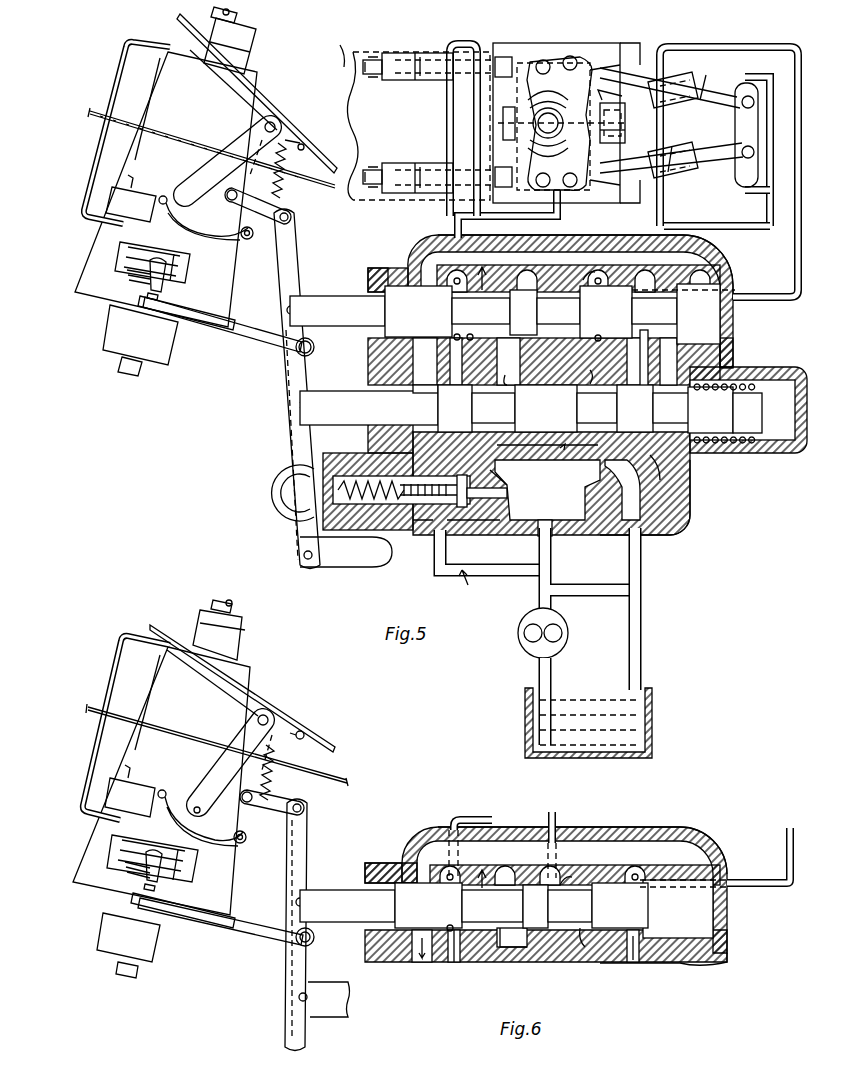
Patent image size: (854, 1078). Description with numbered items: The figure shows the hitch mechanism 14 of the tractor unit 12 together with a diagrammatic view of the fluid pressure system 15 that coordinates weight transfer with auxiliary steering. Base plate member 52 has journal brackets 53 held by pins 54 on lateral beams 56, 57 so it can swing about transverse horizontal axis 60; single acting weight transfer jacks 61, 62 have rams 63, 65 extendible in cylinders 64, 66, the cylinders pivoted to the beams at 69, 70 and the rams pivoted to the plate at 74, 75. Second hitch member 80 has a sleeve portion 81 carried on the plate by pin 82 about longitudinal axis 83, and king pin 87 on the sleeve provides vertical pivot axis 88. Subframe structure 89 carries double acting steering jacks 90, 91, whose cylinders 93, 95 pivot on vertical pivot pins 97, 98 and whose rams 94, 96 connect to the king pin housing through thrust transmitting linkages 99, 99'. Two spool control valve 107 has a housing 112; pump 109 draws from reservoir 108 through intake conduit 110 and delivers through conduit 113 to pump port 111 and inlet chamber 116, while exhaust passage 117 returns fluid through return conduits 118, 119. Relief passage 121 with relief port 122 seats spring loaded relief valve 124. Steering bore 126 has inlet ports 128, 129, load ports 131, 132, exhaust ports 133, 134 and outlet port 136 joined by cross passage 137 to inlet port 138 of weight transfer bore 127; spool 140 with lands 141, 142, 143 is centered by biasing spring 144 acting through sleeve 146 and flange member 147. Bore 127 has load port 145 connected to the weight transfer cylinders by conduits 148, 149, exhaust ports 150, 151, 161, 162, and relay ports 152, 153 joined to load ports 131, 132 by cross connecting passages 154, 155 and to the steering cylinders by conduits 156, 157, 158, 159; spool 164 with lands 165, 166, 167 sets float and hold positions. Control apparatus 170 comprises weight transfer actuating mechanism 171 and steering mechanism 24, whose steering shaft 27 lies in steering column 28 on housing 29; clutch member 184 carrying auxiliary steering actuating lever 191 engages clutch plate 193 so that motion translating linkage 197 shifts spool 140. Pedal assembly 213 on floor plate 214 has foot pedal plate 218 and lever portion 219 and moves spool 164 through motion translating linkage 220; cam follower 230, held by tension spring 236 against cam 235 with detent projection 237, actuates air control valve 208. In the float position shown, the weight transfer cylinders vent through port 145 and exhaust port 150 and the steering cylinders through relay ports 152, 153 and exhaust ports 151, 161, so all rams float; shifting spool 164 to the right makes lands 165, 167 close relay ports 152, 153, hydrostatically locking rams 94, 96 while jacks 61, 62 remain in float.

In FIG. 5, the tractor unit 12 is at (329, 46).
In FIG. 5, the hitch mechanism 14 is at (616, 48).
In FIG. 5, the fluid pressure system 15 is at (461, 586).
In FIG. 5, the steering mechanism 24 is at (76, 296).
In FIG. 6, the steering mechanism 24 is at (74, 890).
In FIG. 5, the steering shaft 27 is at (238, 14).
In FIG. 6, the steering shaft 27 is at (233, 603).
In FIG. 5, the steering column 28 is at (250, 30).
In FIG. 6, the steering column 28 is at (244, 618).
In FIG. 5, the housing 29 is at (178, 52).
In FIG. 6, the housing 29 is at (252, 665).
In FIG. 5, the base plate member 52 is at (625, 45).
In FIG. 5, the journal brackets 53 is at (532, 62).
In FIG. 5, the pins 54 is at (522, 60).
In FIG. 5, the lateral beam 56 is at (366, 168).
In FIG. 5, the lateral beam 57 is at (367, 78).
In FIG. 5, the horizontal pivot axis 60 is at (510, 22).
In FIG. 5, the weight transfer jack 61 is at (405, 163).
In FIG. 5, the weight transfer jack 62 is at (410, 80).
In FIG. 5, the ram element 63 is at (426, 166).
In FIG. 5, the cylinder element 64 is at (400, 193).
In FIG. 5, the ram element 65 is at (415, 52).
In FIG. 5, the cylinder element 66 is at (385, 55).
In FIG. 5, the cylinder pivot connection 69 is at (368, 188).
In FIG. 5, the cylinder pivot connection 70 is at (366, 58).
In FIG. 5, the ram pivot connection 74 is at (495, 175).
In FIG. 5, the ram pivot connection 75 is at (495, 70).
In FIG. 5, the second hitch member 80 is at (625, 95).
In FIG. 5, the sleeve portion 81 is at (624, 131).
In FIG. 5, the pin 82 is at (503, 120).
In FIG. 5, the longitudinal pivot axis 83 is at (624, 123).
In FIG. 5, the king pin 87 is at (548, 154).
In FIG. 5, the vertical pivot axis 88 is at (548, 94).
In FIG. 5, the subframe structure 89 is at (712, 88).
In FIG. 5, the steering jack 90 is at (725, 160).
In FIG. 5, the steering jack 91 is at (740, 88).
In FIG. 5, the hydraulic cylinder 93 is at (690, 168).
In FIG. 5, the ram 94 is at (675, 172).
In FIG. 5, the hydraulic cylinder 95 is at (705, 98).
In FIG. 5, the ram 96 is at (680, 76).
In FIG. 5, the vertical pivot pin 97 is at (750, 158).
In FIG. 5, the vertical pivot pin 98 is at (746, 108).
In FIG. 5, the thrust transmitting linkage 99 is at (603, 190).
In FIG. 5, the thrust transmitting linkage 99' is at (596, 41).
In FIG. 5, the two spool hydraulic control valve 107 is at (700, 500).
In FIG. 6, the two spool hydraulic control valve 107 is at (670, 835).
In FIG. 5, the hydraulic fluid reservoir 108 is at (652, 725).
In FIG. 5, the hydraulic pump 109 is at (525, 645).
In FIG. 5, the intake conduit 110 is at (538, 672).
In FIG. 5, the pump port 111 is at (555, 545).
In FIG. 5, the control valve housing 112 is at (690, 525).
In FIG. 6, the control valve housing 112 is at (715, 963).
In FIG. 5, the conduit 113 is at (556, 592).
In FIG. 5, the inlet chamber 116 is at (547, 490).
In FIG. 5, the exhaust passage 117 is at (645, 256).
In FIG. 6, the exhaust passage 117 is at (605, 827).
In FIG. 5, the return conduit 118 is at (432, 566).
In FIG. 5, the return conduit 119 is at (642, 616).
In FIG. 5, the relief passage 121 is at (510, 490).
In FIG. 5, the relief port 122 is at (470, 535).
In FIG. 5, the relief valve 124 is at (460, 508).
In FIG. 5, the valve spool bore 126 is at (634, 408).
In FIG. 5, the valve spool bore 127 is at (606, 312).
In FIG. 6, the valve spool bore 127 is at (659, 904).
In FIG. 5, the inlet port 128 is at (546, 408).
In FIG. 5, the inlet port 129 is at (455, 408).
In FIG. 5, the load port 131 is at (623, 490).
In FIG. 5, the load port 132 is at (440, 483).
In FIG. 5, the exhaust port 133 is at (659, 462).
In FIG. 5, the exhaust port 134 is at (493, 408).
In FIG. 5, the outlet port 136 is at (580, 462).
In FIG. 5, the cross passage 137 is at (548, 374).
In FIG. 6, the cross passage 137 is at (512, 948).
In FIG. 5, the inlet port 138 is at (497, 272).
In FIG. 6, the inlet port 138 is at (497, 867).
In FIG. 5, the steering valve spool 140 is at (342, 350).
In FIG. 6, the steering valve spool 140 is at (338, 1018).
In FIG. 5, the land portion 141 is at (430, 405).
In FIG. 5, the land portion 142 is at (596, 408).
In FIG. 5, the land portion 143 is at (693, 410).
In FIG. 5, the biasing spring 144 is at (740, 366).
In FIG. 5, the load port 145 is at (577, 266).
In FIG. 6, the load port 145 is at (585, 869).
In FIG. 5, the slidable sleeve 146 is at (750, 443).
In FIG. 5, the flange member 147 is at (785, 368).
In FIG. 5, the conduit 148 is at (452, 222).
In FIG. 6, the conduit 148 is at (556, 812).
In FIG. 5, the conduit 149 is at (462, 42).
In FIG. 5, the exhaust port 150 is at (602, 326).
In FIG. 6, the exhaust port 150 is at (590, 940).
In FIG. 5, the exhaust port 151 is at (476, 325).
In FIG. 6, the exhaust port 151 is at (470, 950).
In FIG. 5, the relay port 152 is at (606, 277).
In FIG. 6, the relay port 152 is at (636, 925).
In FIG. 5, the relay port 153 is at (452, 335).
In FIG. 6, the relay port 153 is at (455, 928).
In FIG. 5, the cross connecting passage 154 is at (655, 340).
In FIG. 6, the cross connecting passage 154 is at (633, 963).
In FIG. 5, the cross connecting passage 155 is at (419, 392).
In FIG. 6, the cross connecting passage 155 is at (432, 963).
In FIG. 5, the conduit 156 is at (770, 45).
In FIG. 6, the conduit 156 is at (786, 835).
In FIG. 5, the conduit 157 is at (760, 185).
In FIG. 5, the conduit 158 is at (745, 280).
In FIG. 6, the conduit 158 is at (480, 804).
In FIG. 5, the conduit 159 is at (668, 218).
In FIG. 5, the exhaust port 161 is at (683, 314).
In FIG. 5, the exhaust port 162 is at (418, 311).
In FIG. 6, the exhaust port 162 is at (428, 905).
In FIG. 5, the weight transfer valve spool 164 is at (330, 290).
In FIG. 6, the weight transfer valve spool 164 is at (335, 878).
In FIG. 5, the land portion 165 is at (385, 305).
In FIG. 6, the land portion 165 is at (395, 906).
In FIG. 5, the land portion 166 is at (510, 305).
In FIG. 6, the land portion 166 is at (520, 906).
In FIG. 5, the land portion 167 is at (585, 307).
In FIG. 6, the land portion 167 is at (595, 905).
In FIG. 5, the vehicle steering and control apparatus 170 is at (198, 330).
In FIG. 6, the vehicle steering and control apparatus 170 is at (198, 925).
In FIG. 5, the weight transfer actuating mechanism 171 is at (302, 135).
In FIG. 6, the weight transfer actuating mechanism 171 is at (320, 745).
In FIG. 5, the clutch member 184 is at (127, 258).
In FIG. 6, the clutch member 184 is at (125, 850).
In FIG. 5, the auxiliary steering actuating lever 191 is at (146, 287).
In FIG. 6, the auxiliary steering actuating lever 191 is at (146, 880).
In FIG. 5, the clutch plate 193 is at (125, 276).
In FIG. 6, the clutch plate 193 is at (125, 872).
In FIG. 5, the motion translating linkage 197 is at (262, 332).
In FIG. 6, the motion translating linkage 197 is at (258, 930).
In FIG. 5, the control valve 208 is at (120, 195).
In FIG. 6, the control valve 208 is at (118, 790).
In FIG. 5, the pedal assembly 213 is at (238, 118).
In FIG. 6, the pedal assembly 213 is at (215, 712).
In FIG. 5, the floor plate 214 is at (93, 110).
In FIG. 6, the floor plate 214 is at (345, 775).
In FIG. 5, the foot pedal plate 218 is at (270, 95).
In FIG. 6, the foot pedal plate 218 is at (265, 705).
In FIG. 5, the lever portion 219 is at (208, 165).
In FIG. 6, the lever portion 219 is at (212, 758).
In FIG. 5, the motion translating linkage 220 is at (298, 240).
In FIG. 6, the motion translating linkage 220 is at (310, 826).
In FIG. 5, the cam follower 230 is at (248, 240).
In FIG. 6, the cam follower 230 is at (242, 844).
In FIG. 5, the cam 235 is at (230, 190).
In FIG. 6, the cam 235 is at (240, 794).
In FIG. 5, the tension spring 236 is at (290, 190).
In FIG. 6, the tension spring 236 is at (283, 785).
In FIG. 5, the projection 237 is at (178, 230).